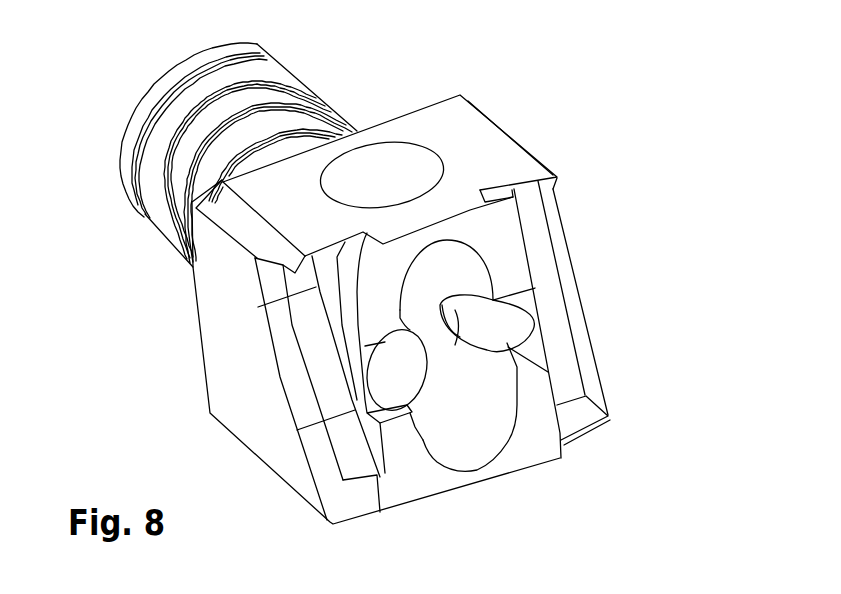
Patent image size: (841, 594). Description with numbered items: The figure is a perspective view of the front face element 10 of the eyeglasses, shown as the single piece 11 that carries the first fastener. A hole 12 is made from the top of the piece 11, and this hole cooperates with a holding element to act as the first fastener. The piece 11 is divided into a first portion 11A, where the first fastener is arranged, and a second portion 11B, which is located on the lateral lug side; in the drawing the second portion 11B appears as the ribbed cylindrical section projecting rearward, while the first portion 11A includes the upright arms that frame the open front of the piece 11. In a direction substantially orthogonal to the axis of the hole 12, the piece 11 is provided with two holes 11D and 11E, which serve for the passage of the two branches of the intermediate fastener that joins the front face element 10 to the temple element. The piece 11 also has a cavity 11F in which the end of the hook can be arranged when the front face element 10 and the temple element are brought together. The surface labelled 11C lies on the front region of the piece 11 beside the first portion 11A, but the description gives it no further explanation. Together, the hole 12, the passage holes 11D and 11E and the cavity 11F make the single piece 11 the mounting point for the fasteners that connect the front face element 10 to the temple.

The front face element 10 is at (531, 129).
The piece 11 is at (243, 410).
The first portion 11A is at (277, 433).
The second portion 11B is at (148, 167).
The side wall 11C is at (323, 377).
The hole 11D is at (427, 340).
The hole 11E is at (497, 324).
The cavity 11F is at (490, 407).
The hole 12 is at (402, 172).